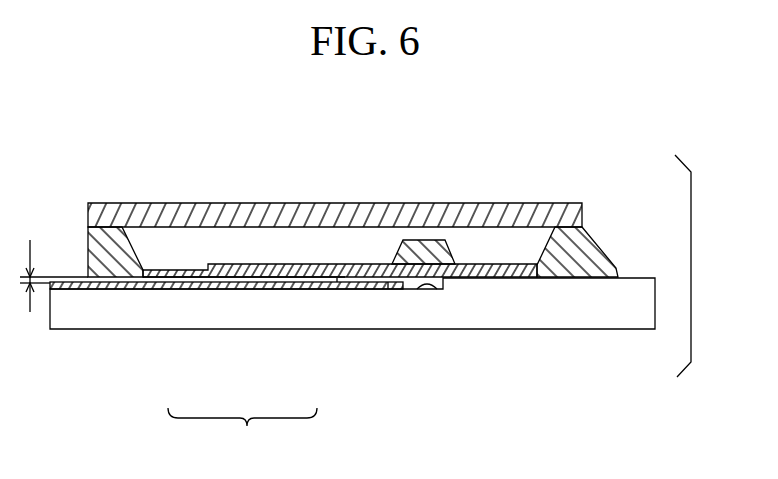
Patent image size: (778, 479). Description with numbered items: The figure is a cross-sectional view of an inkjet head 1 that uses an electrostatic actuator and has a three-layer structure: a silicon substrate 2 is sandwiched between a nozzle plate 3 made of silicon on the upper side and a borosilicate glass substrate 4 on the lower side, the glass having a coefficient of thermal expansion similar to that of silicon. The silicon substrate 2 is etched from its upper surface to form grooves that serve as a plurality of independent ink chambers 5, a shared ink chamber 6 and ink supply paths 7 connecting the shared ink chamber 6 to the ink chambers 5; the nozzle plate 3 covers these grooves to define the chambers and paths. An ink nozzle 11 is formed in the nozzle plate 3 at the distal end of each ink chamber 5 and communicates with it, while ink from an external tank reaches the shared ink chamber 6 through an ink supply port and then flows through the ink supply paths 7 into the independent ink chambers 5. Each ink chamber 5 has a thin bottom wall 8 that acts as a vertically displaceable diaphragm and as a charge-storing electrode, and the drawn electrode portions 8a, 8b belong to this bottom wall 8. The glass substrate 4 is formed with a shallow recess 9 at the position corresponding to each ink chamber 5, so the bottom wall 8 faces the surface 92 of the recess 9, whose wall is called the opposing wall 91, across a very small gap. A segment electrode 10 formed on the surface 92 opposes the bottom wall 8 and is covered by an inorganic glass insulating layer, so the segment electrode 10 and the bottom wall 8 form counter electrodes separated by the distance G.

The inkjet head 1 is at (692, 257).
The silicon substrate 2 is at (593, 238).
The nozzle plate 3 is at (583, 208).
The borosilicate glass substrate 4 is at (630, 315).
The ink chamber 5 is at (317, 247).
The shared ink chamber 6 is at (515, 243).
The ink supply path 7 is at (427, 236).
The bottom wall 8 is at (242, 433).
The lower electrode 8a is at (190, 280).
The upper electrode 8b is at (283, 287).
The recess 9 is at (337, 282).
The segment electrode 10 is at (388, 289).
The ink nozzle 11 is at (148, 214).
The opposing wall 91 is at (128, 308).
The surface of the recess 92 is at (437, 289).
The distance between the electrodes G is at (54, 276).